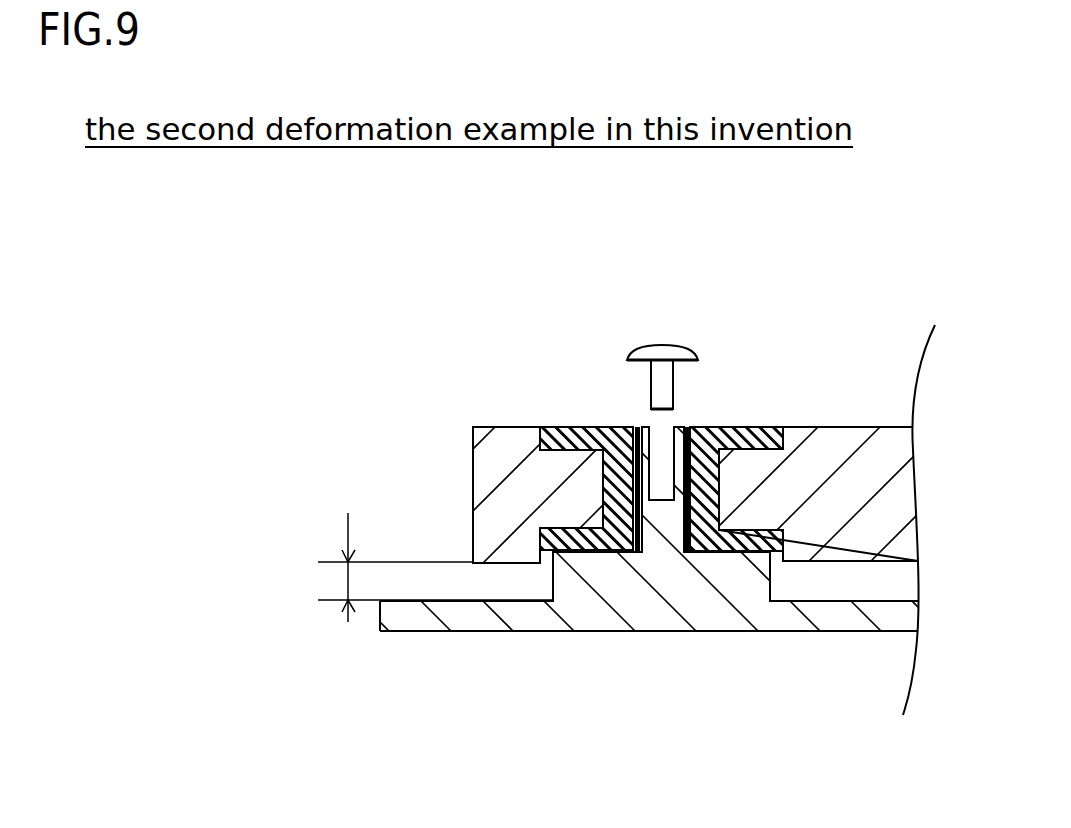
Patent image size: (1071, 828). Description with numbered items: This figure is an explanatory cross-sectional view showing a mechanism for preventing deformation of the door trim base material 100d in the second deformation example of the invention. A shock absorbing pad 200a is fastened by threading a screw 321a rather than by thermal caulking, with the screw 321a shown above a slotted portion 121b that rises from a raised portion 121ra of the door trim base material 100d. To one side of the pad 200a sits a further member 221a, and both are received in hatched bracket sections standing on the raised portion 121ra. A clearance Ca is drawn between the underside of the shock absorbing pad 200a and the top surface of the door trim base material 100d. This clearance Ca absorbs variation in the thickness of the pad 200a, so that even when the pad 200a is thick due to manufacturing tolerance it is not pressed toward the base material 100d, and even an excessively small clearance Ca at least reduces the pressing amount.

The door trim base material 100d is at (380, 623).
The pedestal rail portion 121ra is at (553, 577).
The projection with slot 121b is at (640, 427).
The shock absorbing pad 200a is at (513, 427).
The right member 221a is at (730, 427).
The screw 321a is at (650, 345).
The clearance Ca is at (385, 513).